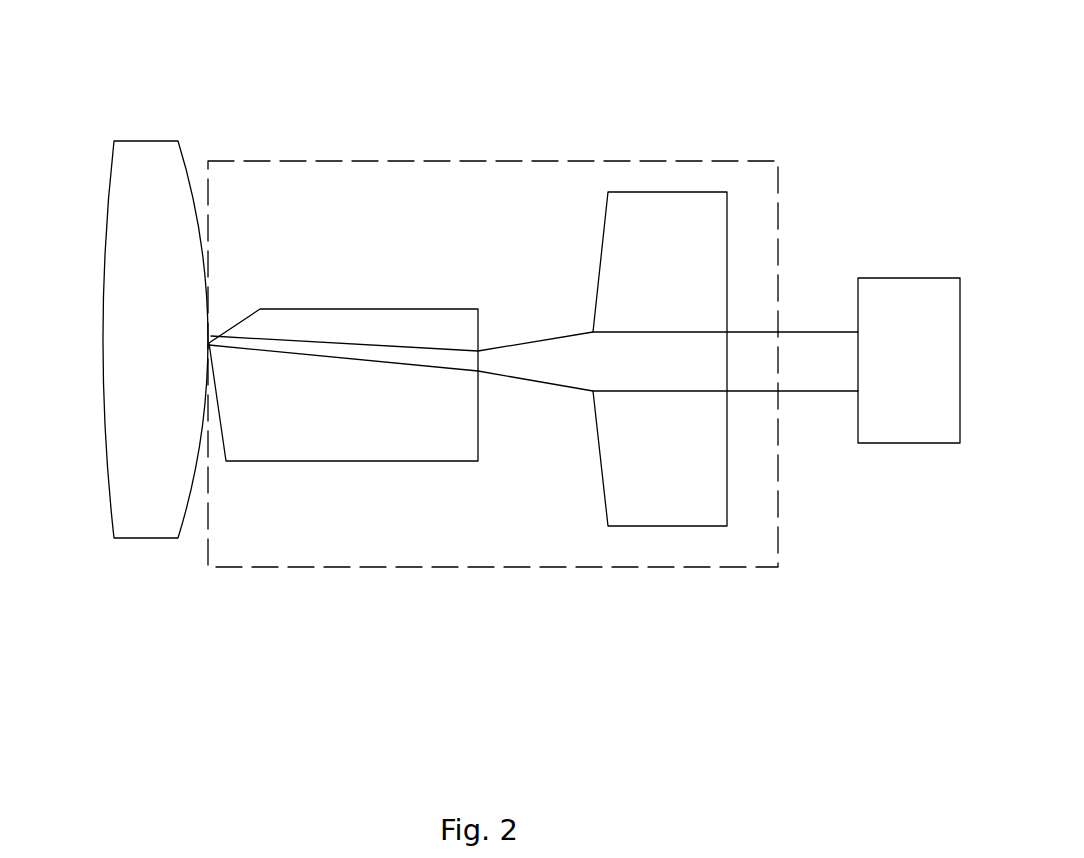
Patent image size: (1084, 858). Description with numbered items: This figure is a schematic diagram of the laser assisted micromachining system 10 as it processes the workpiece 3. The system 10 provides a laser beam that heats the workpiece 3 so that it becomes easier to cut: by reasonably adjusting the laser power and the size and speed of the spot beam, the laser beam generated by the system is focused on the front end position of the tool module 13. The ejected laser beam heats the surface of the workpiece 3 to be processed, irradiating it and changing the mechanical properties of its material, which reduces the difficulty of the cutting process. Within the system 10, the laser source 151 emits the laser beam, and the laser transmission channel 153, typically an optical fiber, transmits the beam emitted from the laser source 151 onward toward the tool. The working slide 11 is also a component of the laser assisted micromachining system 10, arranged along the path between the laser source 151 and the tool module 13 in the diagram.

The laser assisted micromachining system 10 is at (398, 160).
The workpiece 3 is at (173, 270).
The tool module 13 is at (324, 415).
The working slide 11 is at (663, 453).
The laser transmission channel 153 is at (743, 362).
The laser source 151 is at (902, 430).